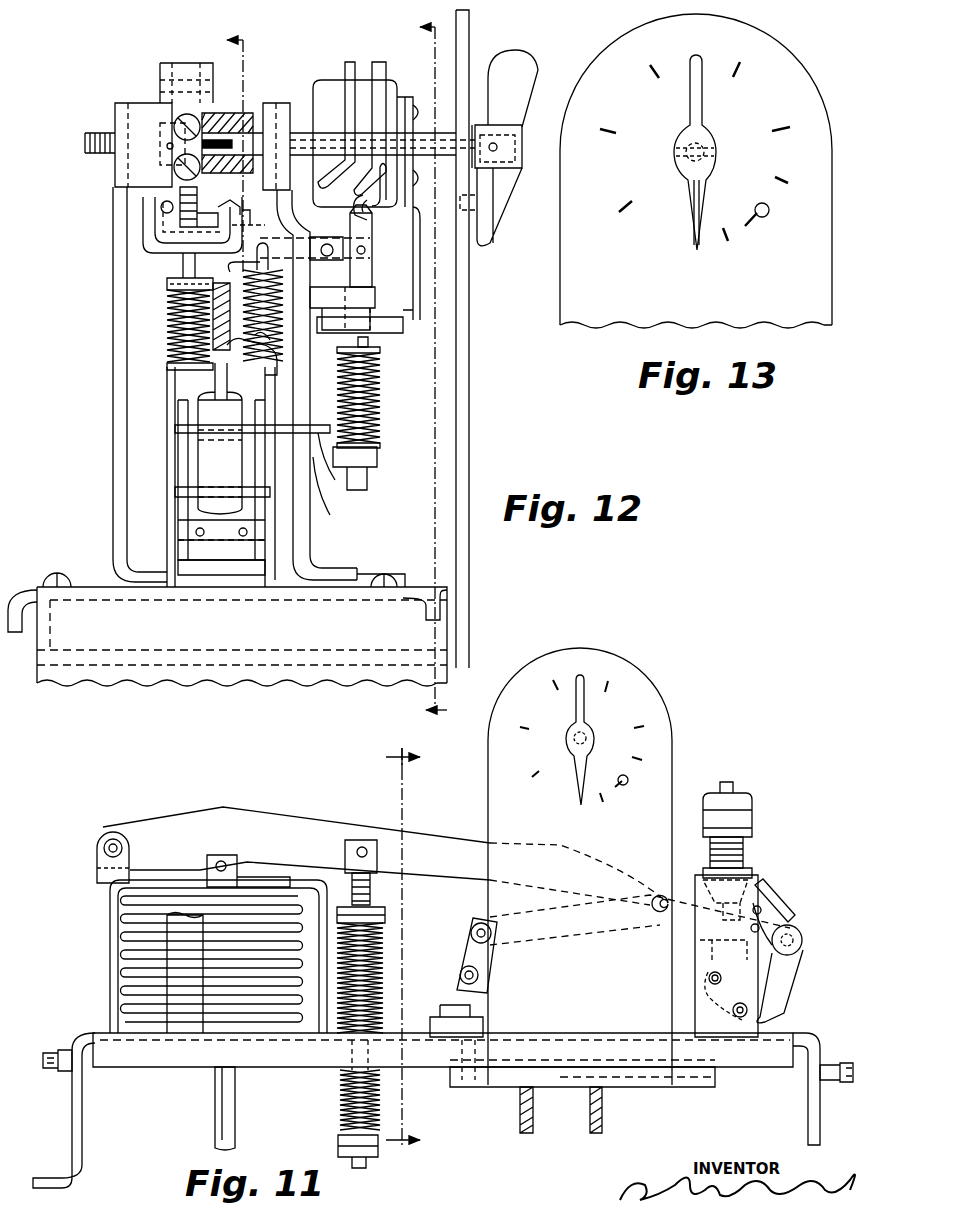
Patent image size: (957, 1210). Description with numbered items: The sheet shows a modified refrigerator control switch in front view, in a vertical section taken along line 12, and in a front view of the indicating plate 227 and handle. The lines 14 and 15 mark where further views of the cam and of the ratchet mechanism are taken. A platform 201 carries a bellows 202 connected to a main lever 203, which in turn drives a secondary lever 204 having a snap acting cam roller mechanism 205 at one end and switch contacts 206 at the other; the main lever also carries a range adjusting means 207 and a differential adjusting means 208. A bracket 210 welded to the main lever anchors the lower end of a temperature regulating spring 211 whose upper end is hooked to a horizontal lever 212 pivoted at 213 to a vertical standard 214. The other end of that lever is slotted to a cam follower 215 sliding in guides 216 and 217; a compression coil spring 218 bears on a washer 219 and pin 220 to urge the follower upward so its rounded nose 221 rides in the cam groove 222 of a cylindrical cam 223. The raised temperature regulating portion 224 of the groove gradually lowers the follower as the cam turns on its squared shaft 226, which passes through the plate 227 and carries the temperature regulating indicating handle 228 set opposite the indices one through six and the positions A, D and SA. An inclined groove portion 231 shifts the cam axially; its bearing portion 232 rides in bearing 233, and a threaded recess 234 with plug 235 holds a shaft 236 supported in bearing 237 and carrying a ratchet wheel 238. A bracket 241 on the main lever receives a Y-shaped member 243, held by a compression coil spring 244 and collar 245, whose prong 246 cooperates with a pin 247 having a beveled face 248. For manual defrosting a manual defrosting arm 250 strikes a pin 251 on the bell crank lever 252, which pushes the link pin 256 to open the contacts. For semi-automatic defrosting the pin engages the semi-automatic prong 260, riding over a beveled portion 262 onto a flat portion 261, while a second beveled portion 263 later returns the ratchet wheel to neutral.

In FIG. 11, the section line 12 is at (417, 950).
In FIG. 12, the section line 14 is at (452, 364).
In FIG. 12, the section line 15 is at (341, 377).
In FIG. 12, the platform 201 is at (16, 590).
In FIG. 11, the platform 201 is at (160, 1050).
In FIG. 11, the bellows 202 is at (135, 915).
In FIG. 12, the main lever 203 is at (232, 268).
In FIG. 11, the main lever 203 is at (343, 830).
In FIG. 12, the secondary lever 204 is at (200, 400).
In FIG. 11, the secondary lever 204 is at (680, 907).
In FIG. 11, the snap acting cam roller mechanism 205 is at (796, 908).
In FIG. 11, the switch contacts 206 is at (432, 1015).
In FIG. 11, the range adjusting means 207 is at (380, 942).
In FIG. 11, the differential adjusting means 208 is at (752, 814).
In FIG. 12, the bracket 210 is at (200, 368).
In FIG. 12, the temperature regulating spring 211 is at (265, 260).
In FIG. 12, the horizontal lever 212 is at (284, 244).
In FIG. 12, the pivot 213 is at (330, 250).
In FIG. 12, the vertical standard 214 is at (113, 452).
In FIG. 12, the cam follower 215 is at (372, 240).
In FIG. 12, the guide 216 is at (372, 296).
In FIG. 12, the guide 217 is at (377, 460).
In FIG. 12, the compression coil spring 218 is at (380, 393).
In FIG. 12, the washer 219 is at (380, 350).
In FIG. 12, the pin 220 is at (368, 340).
In FIG. 12, the rounded nose 221 is at (366, 215).
In FIG. 12, the cam groove 222 is at (333, 95).
In FIG. 12, the cylindrical cam 223 is at (382, 80).
In FIG. 12, the raised temperature regulating portion 224 is at (358, 80).
In FIG. 12, the squared shaft 226 is at (412, 130).
In FIG. 12, the plate 227 is at (458, 280).
In FIG. 13, the plate 227 is at (796, 97).
In FIG. 11, the plate 227 is at (658, 733).
In FIG. 12, the temperature regulating indicating handle 228 is at (520, 90).
In FIG. 13, the temperature regulating indicating handle 228 is at (700, 92).
In FIG. 11, the temperature regulating indicating handle 228 is at (583, 708).
In FIG. 12, the inclined groove portion 231 is at (372, 205).
In FIG. 12, the bearing portion 232 is at (300, 118).
In FIG. 12, the bearing 233 is at (268, 103).
In FIG. 12, the threaded recess 234 is at (218, 115).
In FIG. 12, the threaded plug 235 is at (215, 120).
In FIG. 12, the shaft 236 is at (88, 143).
In FIG. 12, the bearing 237 is at (117, 108).
In FIG. 12, the ratchet wheel 238 is at (180, 195).
In FIG. 12, the bracket 241 is at (167, 284).
In FIG. 12, the Y-shaped member 243 is at (180, 262).
In FIG. 12, the compression coil spring 244 is at (170, 325).
In FIG. 12, the collar 245 is at (180, 300).
In FIG. 12, the prong 246 is at (150, 220).
In FIG. 12, the pin 247 is at (180, 200).
In FIG. 12, the beveled face 248 is at (158, 230).
In FIG. 12, the manual defrosting arm 250 is at (418, 258).
In FIG. 12, the pin 251 is at (392, 325).
In FIG. 12, the bell crank lever 252 is at (333, 515).
In FIG. 12, the link pin 256 is at (335, 480).
In FIG. 12, the semi-automatic prong 260 is at (238, 226).
In FIG. 12, the flat portion 261 is at (238, 193).
In FIG. 12, the beveled portion 262 is at (232, 205).
In FIG. 12, the second beveled portion 263 is at (246, 204).